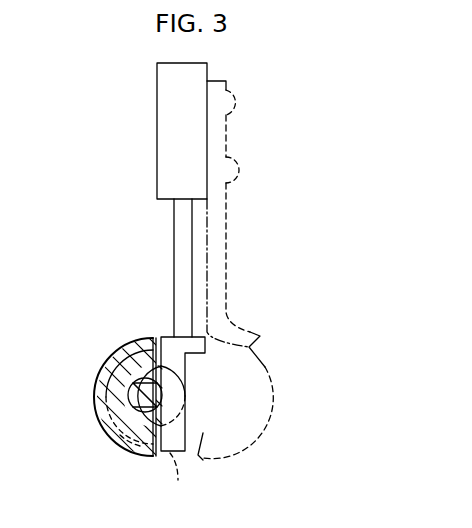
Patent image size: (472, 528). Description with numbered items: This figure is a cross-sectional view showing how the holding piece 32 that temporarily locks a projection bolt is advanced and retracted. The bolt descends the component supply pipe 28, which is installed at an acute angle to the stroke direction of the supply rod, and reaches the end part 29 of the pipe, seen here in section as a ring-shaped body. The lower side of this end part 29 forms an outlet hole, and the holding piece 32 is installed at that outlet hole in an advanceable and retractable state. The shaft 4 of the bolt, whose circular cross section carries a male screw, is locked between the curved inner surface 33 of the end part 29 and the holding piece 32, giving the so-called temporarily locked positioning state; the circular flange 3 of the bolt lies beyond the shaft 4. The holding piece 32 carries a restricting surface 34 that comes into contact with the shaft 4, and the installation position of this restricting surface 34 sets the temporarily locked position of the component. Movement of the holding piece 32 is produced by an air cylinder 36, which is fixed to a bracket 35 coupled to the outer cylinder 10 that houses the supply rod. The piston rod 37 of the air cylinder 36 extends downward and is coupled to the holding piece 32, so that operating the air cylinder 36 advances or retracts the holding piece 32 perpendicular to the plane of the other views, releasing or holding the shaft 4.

The circular flange 3 is at (179, 479).
The shaft 4 is at (120, 435).
The outer cylinder 10 is at (270, 366).
The component supply pipe 28 is at (148, 342).
The end part 29 is at (97, 363).
The holding piece 32 is at (185, 418).
The inner surface 33 is at (130, 408).
The restricting surface 34 is at (163, 366).
The bracket 35 is at (227, 232).
The air cylinder 36 is at (157, 132).
The piston rod 37 is at (174, 249).